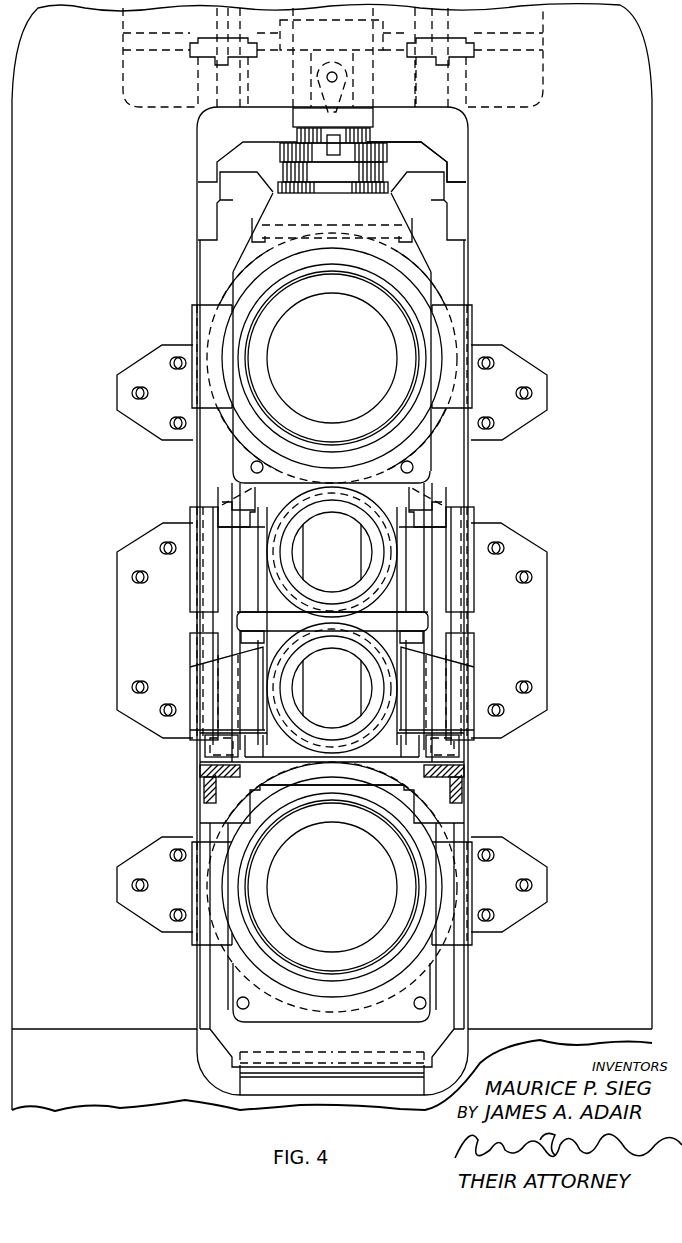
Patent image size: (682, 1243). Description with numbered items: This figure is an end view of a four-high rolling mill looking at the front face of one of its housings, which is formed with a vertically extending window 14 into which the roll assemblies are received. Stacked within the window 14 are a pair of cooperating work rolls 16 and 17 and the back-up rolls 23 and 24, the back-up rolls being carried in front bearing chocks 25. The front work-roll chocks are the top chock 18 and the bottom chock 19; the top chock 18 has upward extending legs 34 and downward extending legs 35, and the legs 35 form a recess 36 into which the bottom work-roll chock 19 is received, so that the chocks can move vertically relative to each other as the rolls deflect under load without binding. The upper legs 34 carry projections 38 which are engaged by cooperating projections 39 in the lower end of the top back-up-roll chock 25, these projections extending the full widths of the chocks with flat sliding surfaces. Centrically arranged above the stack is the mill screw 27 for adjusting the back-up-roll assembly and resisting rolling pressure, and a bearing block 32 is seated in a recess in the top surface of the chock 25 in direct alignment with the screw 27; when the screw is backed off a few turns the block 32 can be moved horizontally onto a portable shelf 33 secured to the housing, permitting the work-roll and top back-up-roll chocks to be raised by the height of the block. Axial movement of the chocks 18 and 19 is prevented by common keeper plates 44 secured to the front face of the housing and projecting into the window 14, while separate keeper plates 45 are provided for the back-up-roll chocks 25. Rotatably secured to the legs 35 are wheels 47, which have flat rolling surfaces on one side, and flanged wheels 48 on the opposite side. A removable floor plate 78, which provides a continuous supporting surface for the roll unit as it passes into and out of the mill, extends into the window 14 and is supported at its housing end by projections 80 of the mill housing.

The window 14 is at (200, 144).
The work roll 16 is at (343, 551).
The work roll 17 is at (343, 686).
The front top work-roll bearing-chock assembly 18 is at (391, 597).
The front bottom work-roll bearing-chock assembly 19 is at (336, 770).
The back-up roll 23 is at (343, 391).
The back-up roll 24 is at (343, 921).
The front back-up-roll bearing chock 25 is at (440, 188).
The mill screw 27 is at (326, 97).
The bearing block 32 is at (386, 154).
The portable shelf 33 is at (425, 256).
The upward extending leg 34 is at (458, 500).
The downward extending leg 35 is at (223, 628).
The recess 36 is at (295, 640).
The projection 38 is at (447, 473).
The projection 39 is at (445, 495).
The keeper plate 44 is at (538, 624).
The keeper plate 45 is at (540, 389).
The wheel 47 is at (206, 746).
The flanged wheel 48 is at (465, 769).
The removable floor plate 78 is at (205, 762).
The projection of the mill housing 80 is at (204, 797).